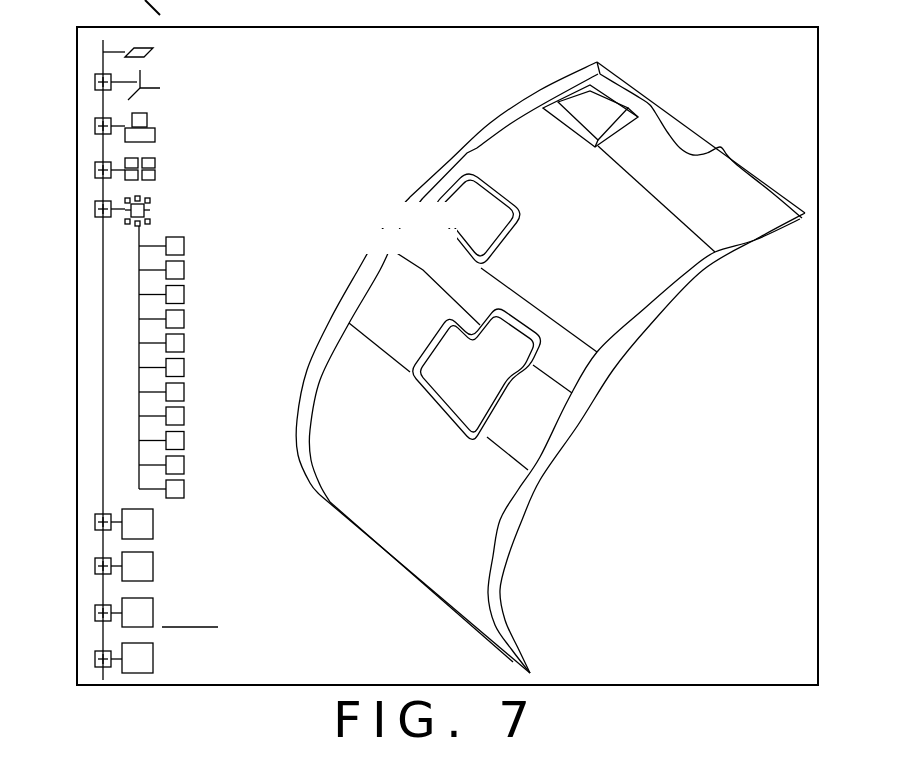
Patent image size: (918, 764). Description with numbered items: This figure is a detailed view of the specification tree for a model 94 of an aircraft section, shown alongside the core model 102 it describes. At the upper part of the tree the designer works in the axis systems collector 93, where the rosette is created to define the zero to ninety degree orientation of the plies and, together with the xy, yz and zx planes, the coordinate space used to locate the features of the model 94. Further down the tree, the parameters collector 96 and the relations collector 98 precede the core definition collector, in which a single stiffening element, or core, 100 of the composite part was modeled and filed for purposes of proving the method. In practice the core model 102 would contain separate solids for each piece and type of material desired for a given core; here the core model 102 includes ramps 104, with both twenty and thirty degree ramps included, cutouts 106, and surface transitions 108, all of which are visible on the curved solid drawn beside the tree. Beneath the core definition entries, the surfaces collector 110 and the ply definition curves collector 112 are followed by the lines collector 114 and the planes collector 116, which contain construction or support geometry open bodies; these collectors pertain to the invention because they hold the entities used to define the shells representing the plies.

The axis systems collector 93 is at (97, 81).
The model 94 is at (145, 699).
The parameters tree node 96 is at (97, 126).
The relations tree node 98 is at (97, 170).
The stiffening element (core) 100 is at (97, 209).
The core model 102 is at (690, 690).
The ramps 104 is at (612, 93).
The cutouts 106 is at (470, 193).
The surface transitions 108 is at (565, 353).
The surfaces tree node 110 is at (97, 521).
The ply definition curves tree node 112 is at (97, 565).
The lines collector 114 is at (97, 613).
The planes collector 116 is at (97, 658).